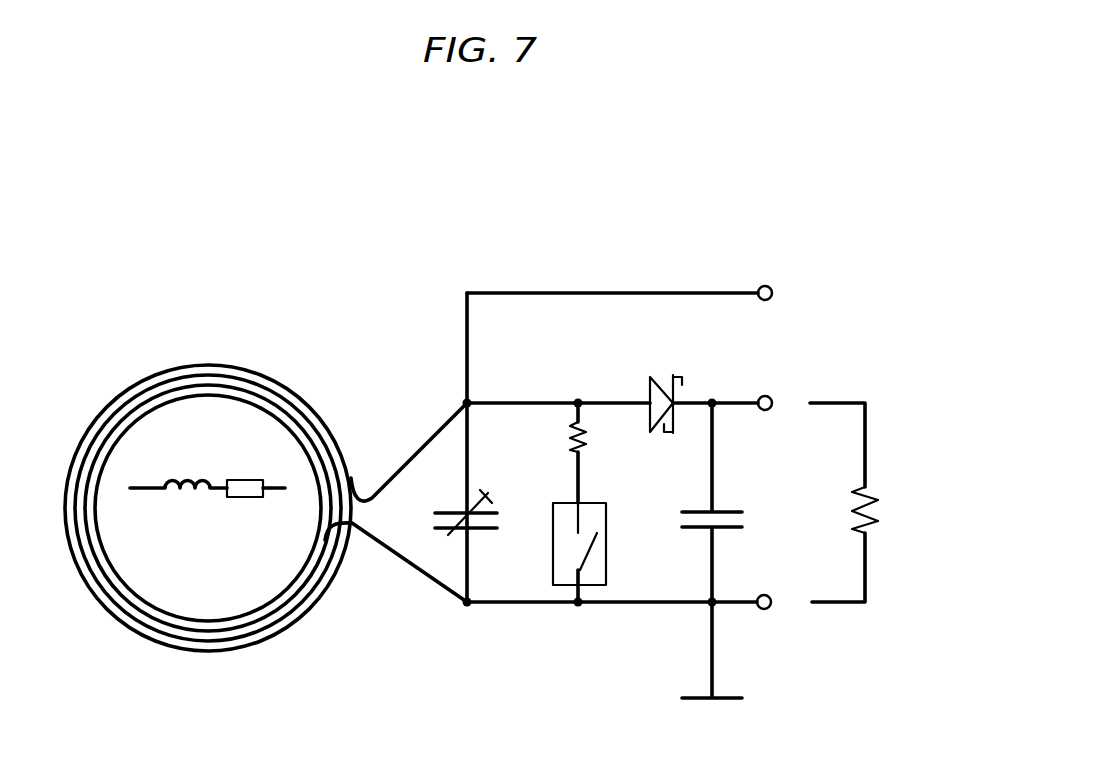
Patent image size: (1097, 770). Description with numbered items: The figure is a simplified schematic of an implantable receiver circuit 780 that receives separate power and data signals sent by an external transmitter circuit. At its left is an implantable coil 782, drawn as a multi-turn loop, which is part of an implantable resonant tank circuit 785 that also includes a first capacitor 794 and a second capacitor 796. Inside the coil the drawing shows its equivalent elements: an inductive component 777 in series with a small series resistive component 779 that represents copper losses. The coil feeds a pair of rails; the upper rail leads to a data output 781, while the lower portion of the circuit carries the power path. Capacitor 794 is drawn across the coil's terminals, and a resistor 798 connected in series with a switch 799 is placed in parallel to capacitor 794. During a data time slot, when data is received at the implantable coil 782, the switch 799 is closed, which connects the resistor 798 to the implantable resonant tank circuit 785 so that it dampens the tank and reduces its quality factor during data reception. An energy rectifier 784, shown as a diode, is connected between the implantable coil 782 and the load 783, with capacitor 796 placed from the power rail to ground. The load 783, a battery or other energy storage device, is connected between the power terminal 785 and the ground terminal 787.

The implantable receiver circuit 780 is at (252, 190).
The implantable resonant tank circuit 785 is at (436, 272).
The data output 781 is at (772, 296).
The implantable coil 782 is at (212, 652).
The load 783 is at (880, 507).
The energy rectifier 784 is at (650, 390).
The ground terminal 787 is at (769, 608).
The inductive component 777 is at (182, 497).
The series resistive component 779 is at (252, 497).
The capacitor 794 is at (488, 521).
The capacitor 796 is at (728, 510).
The resistor 798 is at (587, 441).
The switch 799 is at (553, 550).